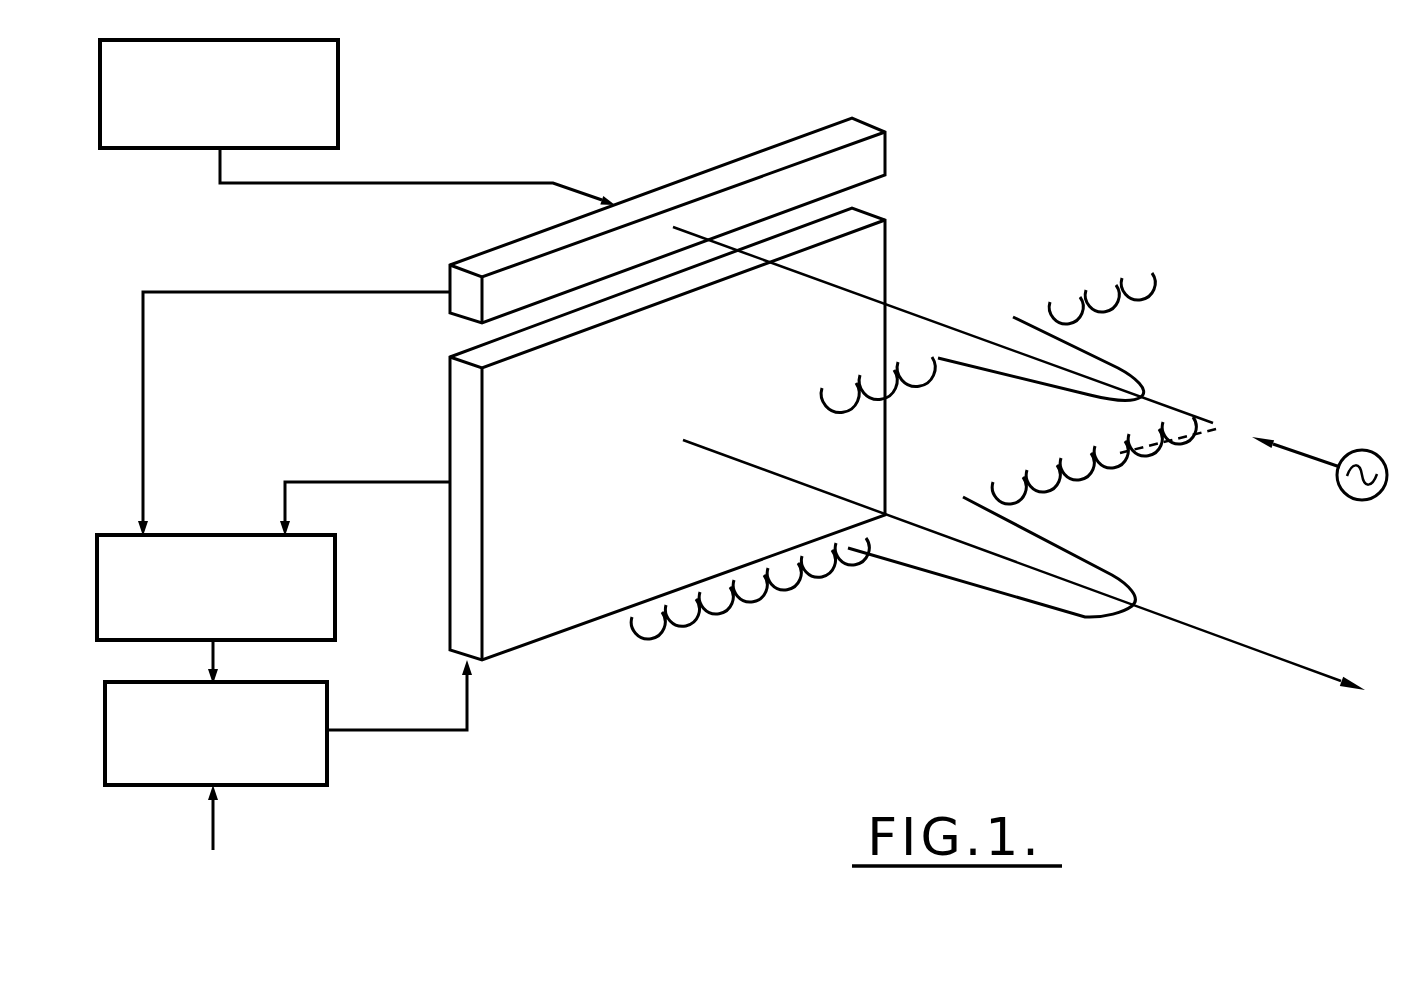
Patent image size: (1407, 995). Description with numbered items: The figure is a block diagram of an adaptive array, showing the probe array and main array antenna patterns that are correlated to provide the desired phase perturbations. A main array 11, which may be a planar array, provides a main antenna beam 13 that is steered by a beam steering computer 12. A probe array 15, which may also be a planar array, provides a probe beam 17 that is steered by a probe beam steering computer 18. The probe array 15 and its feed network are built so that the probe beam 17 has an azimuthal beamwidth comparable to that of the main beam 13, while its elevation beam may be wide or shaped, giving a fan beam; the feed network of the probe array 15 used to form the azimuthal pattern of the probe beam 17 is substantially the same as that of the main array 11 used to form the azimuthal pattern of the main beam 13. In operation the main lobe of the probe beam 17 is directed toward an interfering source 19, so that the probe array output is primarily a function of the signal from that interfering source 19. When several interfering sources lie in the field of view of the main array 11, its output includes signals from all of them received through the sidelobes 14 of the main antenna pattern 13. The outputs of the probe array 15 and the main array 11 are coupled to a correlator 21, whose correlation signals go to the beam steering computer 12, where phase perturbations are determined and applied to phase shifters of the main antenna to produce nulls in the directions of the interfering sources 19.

The probe beam steering computer 18 is at (338, 84).
The correlator 21 is at (216, 535).
The beam steering computer 12 is at (327, 766).
The probe array 15 is at (881, 124).
The main array 11 is at (889, 240).
The probe beam 17 is at (1125, 372).
The main antenna beam 13 is at (1090, 620).
The sidelobes 14 is at (1149, 478).
The interfering source 19 is at (1365, 450).